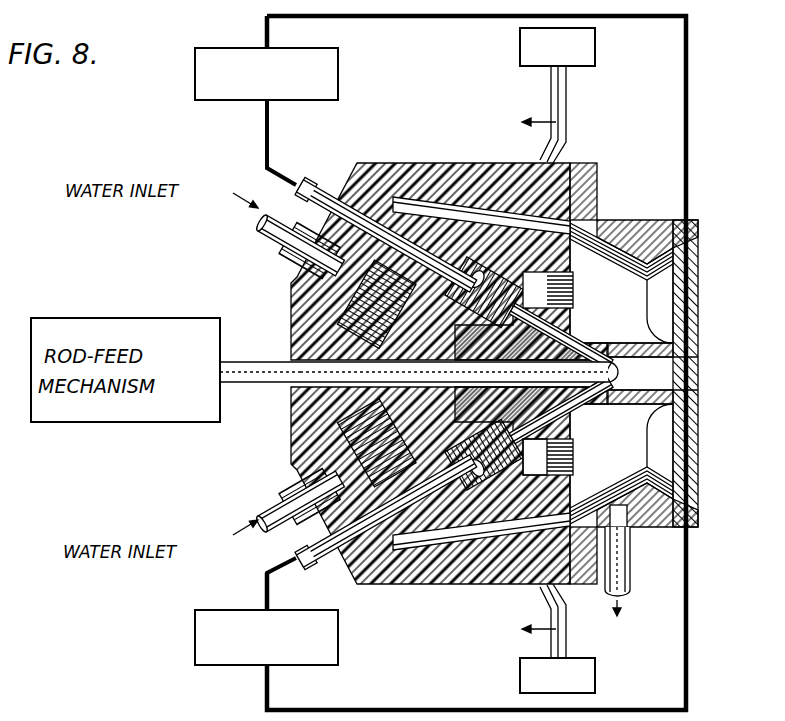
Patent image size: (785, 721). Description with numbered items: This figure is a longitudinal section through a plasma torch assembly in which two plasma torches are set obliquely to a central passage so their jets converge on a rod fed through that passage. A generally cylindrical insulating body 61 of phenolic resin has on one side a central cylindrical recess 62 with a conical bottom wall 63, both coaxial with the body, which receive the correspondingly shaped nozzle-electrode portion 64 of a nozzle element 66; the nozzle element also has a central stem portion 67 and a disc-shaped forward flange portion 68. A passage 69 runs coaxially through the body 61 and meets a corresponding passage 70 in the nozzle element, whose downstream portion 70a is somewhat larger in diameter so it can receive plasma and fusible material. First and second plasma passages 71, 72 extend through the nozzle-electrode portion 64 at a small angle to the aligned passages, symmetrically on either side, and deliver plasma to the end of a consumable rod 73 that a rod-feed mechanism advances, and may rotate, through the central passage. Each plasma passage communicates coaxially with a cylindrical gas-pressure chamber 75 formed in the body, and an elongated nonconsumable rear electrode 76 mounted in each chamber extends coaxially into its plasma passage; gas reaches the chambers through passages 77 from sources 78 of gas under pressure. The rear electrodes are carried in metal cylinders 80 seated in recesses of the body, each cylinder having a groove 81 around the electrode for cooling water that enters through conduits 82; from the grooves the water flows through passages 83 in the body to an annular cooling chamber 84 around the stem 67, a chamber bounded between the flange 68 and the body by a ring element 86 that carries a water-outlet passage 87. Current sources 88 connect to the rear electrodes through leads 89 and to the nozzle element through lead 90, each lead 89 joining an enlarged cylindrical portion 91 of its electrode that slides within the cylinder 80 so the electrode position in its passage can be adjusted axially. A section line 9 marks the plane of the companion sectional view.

The section line 9- 9 is at (526, 378).
The insulating body 61 is at (291, 434).
The central cylindrical recess 62 is at (557, 471).
The conical bottom wall 63 is at (470, 420).
The nozzle-electrode portion 64 is at (592, 339).
The nozzle element 66 is at (702, 271).
The central stem portion 67 is at (648, 401).
The forward flange portion 68 is at (699, 481).
The passage 69 is at (292, 377).
The passage 70 is at (570, 406).
The downstream portion 70a is at (688, 386).
The first plasma passage 71 is at (560, 343).
The second plasma passage 72 is at (603, 390).
The consumable rod 73 is at (243, 362).
The gas-pressure chamber 75 is at (448, 300).
The rear electrode 76 is at (522, 308).
The gas passage 77 is at (566, 105).
The gas source 78 is at (597, 40).
The metal cylinder 80 is at (300, 266).
The recess or groove 81 is at (337, 302).
The conduit 82 is at (262, 229).
The passage 83 is at (430, 205).
The annular cooling chamber 84 is at (663, 439).
The ring element 86 is at (622, 220).
The water-outlet passage 87 is at (630, 582).
The current source 88 is at (340, 68).
The lead 89 is at (264, 130).
The lead 90 is at (689, 77).
The enlarged cylindrical portion 91 is at (320, 193).